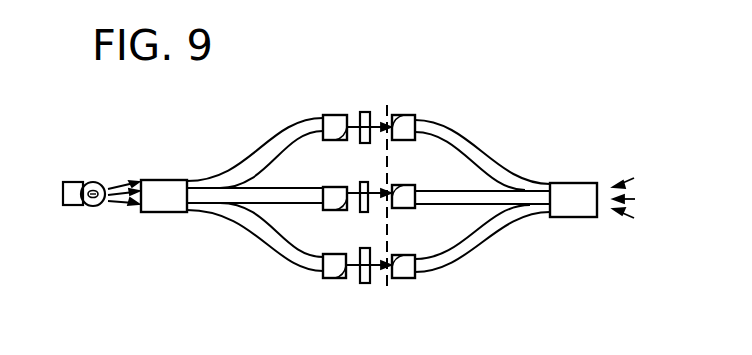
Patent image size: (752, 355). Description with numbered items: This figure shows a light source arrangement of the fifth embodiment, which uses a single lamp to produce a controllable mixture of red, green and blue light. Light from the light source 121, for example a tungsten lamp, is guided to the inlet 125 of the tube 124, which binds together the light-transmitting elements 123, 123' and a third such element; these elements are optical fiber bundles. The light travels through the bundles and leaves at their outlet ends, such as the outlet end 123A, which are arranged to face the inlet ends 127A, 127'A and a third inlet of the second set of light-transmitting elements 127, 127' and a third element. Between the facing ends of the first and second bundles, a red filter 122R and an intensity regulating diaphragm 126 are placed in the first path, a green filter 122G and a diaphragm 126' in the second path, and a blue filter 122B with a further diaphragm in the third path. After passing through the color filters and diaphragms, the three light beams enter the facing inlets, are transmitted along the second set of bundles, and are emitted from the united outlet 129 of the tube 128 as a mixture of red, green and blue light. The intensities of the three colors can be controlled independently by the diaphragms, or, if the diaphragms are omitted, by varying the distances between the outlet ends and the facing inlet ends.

The light source 121 is at (75, 182).
The tube 124 is at (165, 184).
The inlet 125 is at (140, 209).
The light-transmitting element 123 is at (255, 147).
The light-transmitting element 123' is at (255, 225).
The outlet end 123A is at (334, 115).
The red filter 122R is at (364, 112).
The green filter 122G is at (362, 182).
The blue filter 122B is at (363, 284).
The intensity regulating diaphragm 126 is at (385, 163).
The diaphragm 126' is at (413, 161).
The inlet end 127A is at (398, 115).
The inlet end 127'A is at (430, 184).
The light-transmitting element 127 is at (482, 140).
The light-transmitting element 127' is at (482, 223).
The tube 128 is at (571, 190).
The united outlet 129 is at (600, 210).